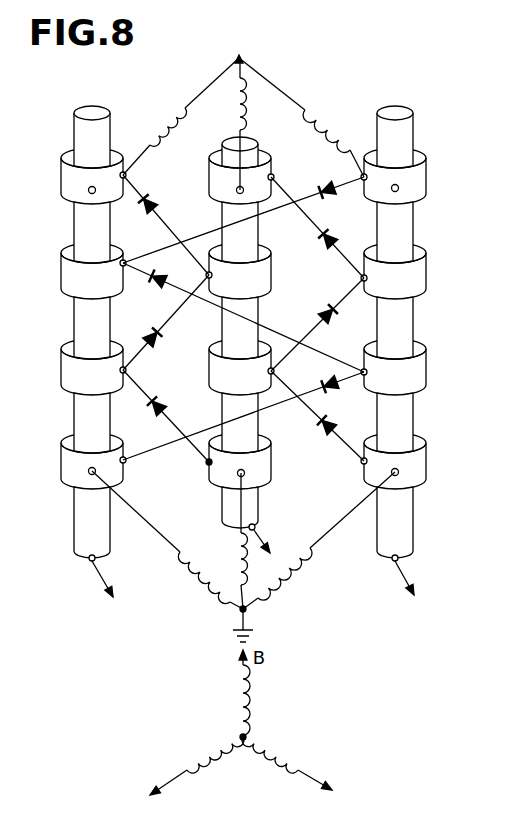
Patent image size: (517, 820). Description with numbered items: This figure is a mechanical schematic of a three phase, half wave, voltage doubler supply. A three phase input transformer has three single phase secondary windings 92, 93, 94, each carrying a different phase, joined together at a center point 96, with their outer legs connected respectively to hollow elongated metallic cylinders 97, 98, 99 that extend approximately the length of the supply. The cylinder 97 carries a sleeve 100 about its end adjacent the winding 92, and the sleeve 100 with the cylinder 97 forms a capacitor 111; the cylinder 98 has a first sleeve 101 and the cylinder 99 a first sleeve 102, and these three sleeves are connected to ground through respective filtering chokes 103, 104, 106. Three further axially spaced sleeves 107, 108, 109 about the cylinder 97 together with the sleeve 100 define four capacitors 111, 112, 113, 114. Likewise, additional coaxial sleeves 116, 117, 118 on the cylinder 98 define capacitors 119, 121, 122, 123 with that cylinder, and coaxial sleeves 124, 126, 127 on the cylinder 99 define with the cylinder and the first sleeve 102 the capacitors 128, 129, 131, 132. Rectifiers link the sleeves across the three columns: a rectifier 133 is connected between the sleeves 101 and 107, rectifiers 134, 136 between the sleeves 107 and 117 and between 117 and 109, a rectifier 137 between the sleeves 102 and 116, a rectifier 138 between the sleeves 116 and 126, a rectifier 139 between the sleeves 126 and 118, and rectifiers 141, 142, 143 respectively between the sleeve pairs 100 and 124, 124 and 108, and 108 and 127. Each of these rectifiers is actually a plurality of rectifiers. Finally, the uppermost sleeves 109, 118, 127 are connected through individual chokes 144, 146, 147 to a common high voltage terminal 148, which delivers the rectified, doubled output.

The single phase secondary winding 92 is at (198, 748).
The single phase secondary winding 93 is at (250, 690).
The single phase secondary winding 94 is at (256, 729).
The center point 96 is at (243, 748).
The hollow elongated metallic cylinder 97 is at (77, 521).
The hollow elongated metallic cylinder 98 is at (225, 505).
The hollow elongated metallic cylinder 99 is at (414, 516).
The sleeve 100 is at (64, 475).
The first sleeve 101 is at (275, 480).
The first sleeve 102 is at (428, 463).
The filtering choke 103 is at (188, 584).
The filtering choke 104 is at (238, 548).
The filtering choke 106 is at (292, 585).
The sleeve 107 is at (68, 386).
The sleeve 108 is at (63, 272).
The sleeve 109 is at (65, 199).
The capacitor 111 is at (122, 445).
The capacitor 112 is at (70, 341).
The capacitor 113 is at (122, 253).
The capacitor 114 is at (125, 148).
The coaxial sleeve 116 is at (212, 383).
The coaxial sleeve 117 is at (272, 272).
The coaxial sleeve 118 is at (210, 163).
The capacitor 119 is at (267, 439).
The capacitor 121 is at (208, 346).
The capacitor 122 is at (258, 251).
The capacitor 123 is at (262, 149).
The coaxial sleeve 124 is at (427, 375).
The coaxial sleeve 126 is at (427, 272).
The coaxial sleeve 127 is at (428, 170).
The capacitor 128 is at (426, 436).
The capacitor 129 is at (425, 346).
The capacitor 131 is at (420, 251).
The capacitor 132 is at (425, 150).
The rectifier 133 is at (160, 393).
The rectifier 134 is at (146, 331).
The rectifier 136 is at (160, 209).
The rectifier 137 is at (326, 437).
The rectifier 138 is at (318, 304).
The rectifier 139 is at (336, 236).
The rectifier 141 is at (334, 389).
The rectifier 142 is at (170, 281).
The rectifier 143 is at (322, 184).
The choke 144 is at (160, 123).
The choke 146 is at (237, 104).
The choke 147 is at (332, 113).
The high voltage terminal 148 is at (236, 56).